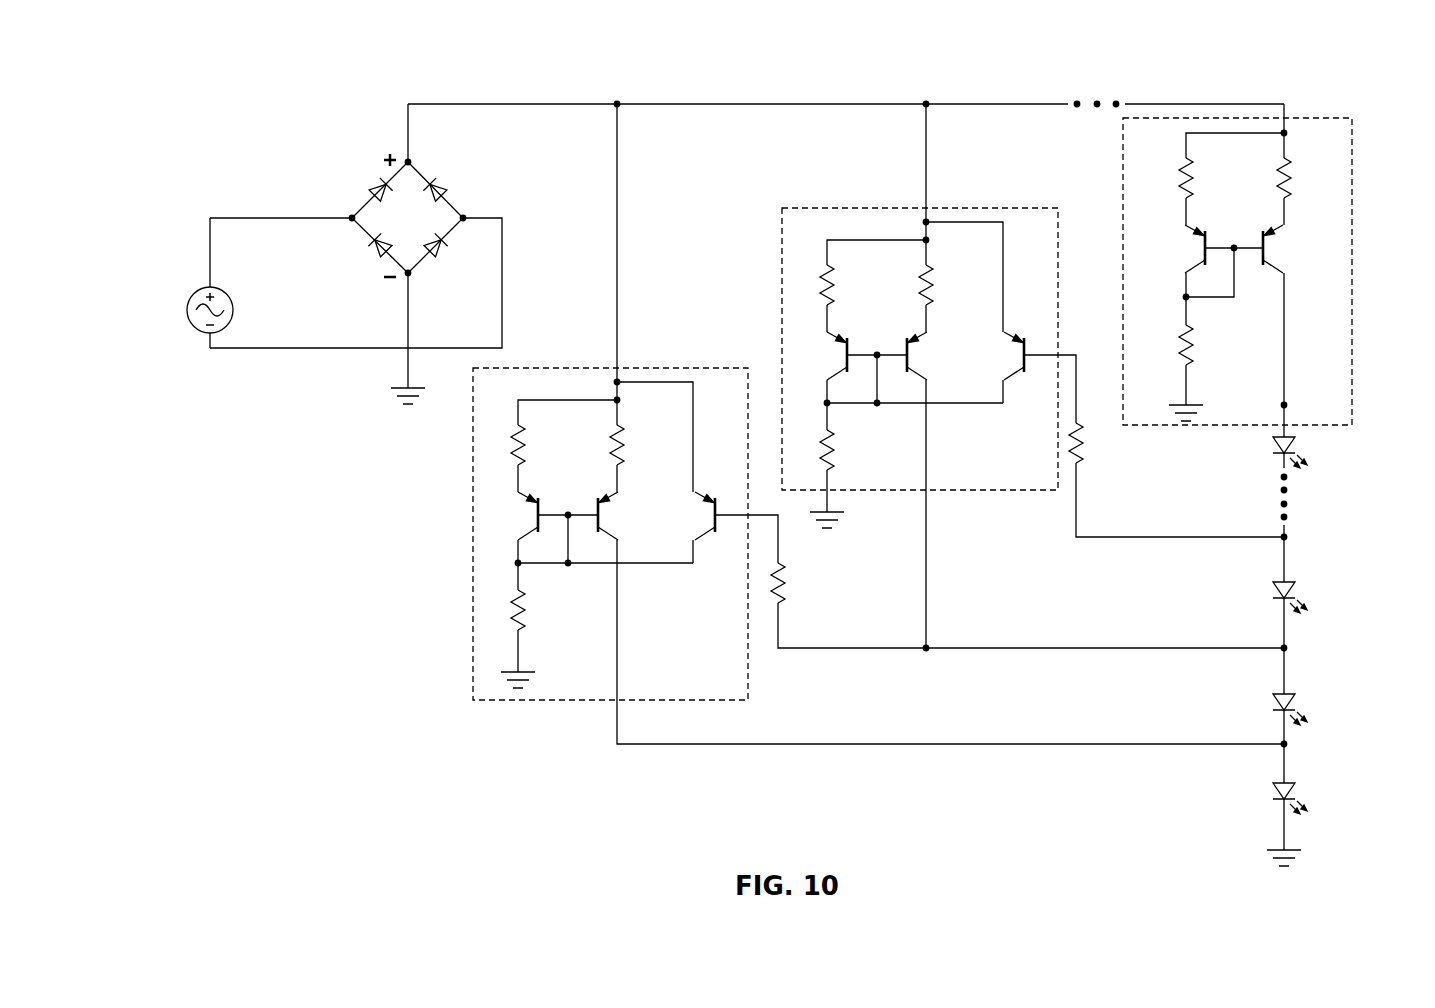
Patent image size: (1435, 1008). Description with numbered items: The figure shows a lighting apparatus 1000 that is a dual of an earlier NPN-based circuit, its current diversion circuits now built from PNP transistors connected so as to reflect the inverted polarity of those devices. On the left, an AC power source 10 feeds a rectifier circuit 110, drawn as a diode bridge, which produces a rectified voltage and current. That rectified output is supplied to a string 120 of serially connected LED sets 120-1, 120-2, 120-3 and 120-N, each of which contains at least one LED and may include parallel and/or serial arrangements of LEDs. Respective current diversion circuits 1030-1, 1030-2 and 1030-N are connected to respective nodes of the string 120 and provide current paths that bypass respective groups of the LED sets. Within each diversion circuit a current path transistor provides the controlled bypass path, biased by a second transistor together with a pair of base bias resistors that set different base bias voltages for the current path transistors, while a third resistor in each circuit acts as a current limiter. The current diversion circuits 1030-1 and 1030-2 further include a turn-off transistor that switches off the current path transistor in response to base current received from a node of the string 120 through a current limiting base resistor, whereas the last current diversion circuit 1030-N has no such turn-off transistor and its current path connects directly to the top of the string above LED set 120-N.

The lighting apparatus 1000 is at (237, 78).
The AC power source 10 is at (187, 311).
The rectifier circuit 110 is at (458, 161).
The current diversion circuit 1030-1 is at (567, 700).
The current diversion circuit 1030-2 is at (885, 208).
The current diversion circuit 1030-N is at (1123, 172).
The string 120 is at (1260, 806).
The LED set 120-1 is at (1308, 789).
The LED set 120-2 is at (1308, 702).
The LED set 120-3 is at (1308, 588).
The LED set 120-N is at (1308, 442).